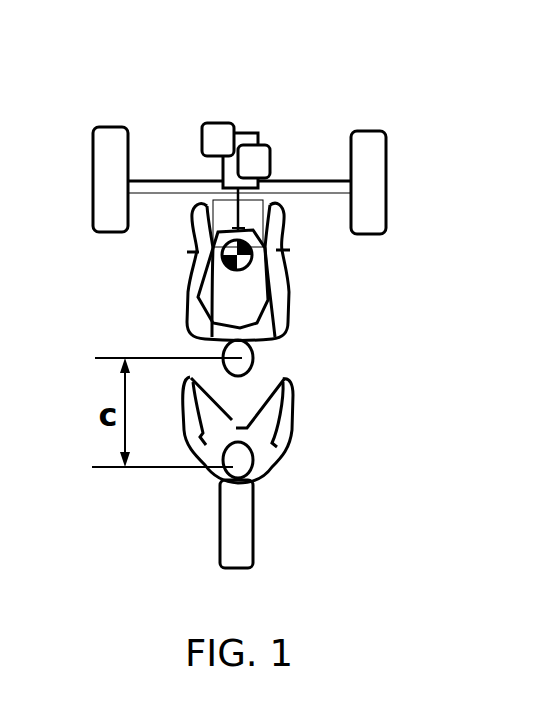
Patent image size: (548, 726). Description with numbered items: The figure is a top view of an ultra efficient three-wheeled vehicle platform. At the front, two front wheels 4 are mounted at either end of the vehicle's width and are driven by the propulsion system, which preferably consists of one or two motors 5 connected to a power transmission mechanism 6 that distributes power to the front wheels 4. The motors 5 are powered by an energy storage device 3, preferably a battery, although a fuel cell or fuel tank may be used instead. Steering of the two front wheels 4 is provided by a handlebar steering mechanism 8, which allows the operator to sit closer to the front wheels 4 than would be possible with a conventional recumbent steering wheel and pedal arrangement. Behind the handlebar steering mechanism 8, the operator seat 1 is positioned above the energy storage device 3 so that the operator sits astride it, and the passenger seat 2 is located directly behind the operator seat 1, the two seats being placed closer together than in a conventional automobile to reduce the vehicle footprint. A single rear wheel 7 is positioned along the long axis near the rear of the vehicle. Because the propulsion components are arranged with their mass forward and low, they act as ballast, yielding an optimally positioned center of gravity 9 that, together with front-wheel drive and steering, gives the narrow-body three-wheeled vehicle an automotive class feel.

The operator seat 1 is at (233, 356).
The passenger seat 2 is at (235, 458).
The energy storage device 3 is at (245, 290).
The front wheels 4 is at (113, 150).
The motors 5 is at (262, 162).
The power transmission mechanism 6 is at (235, 178).
The rear wheel 7 is at (238, 531).
The handlebar steering mechanism 8 is at (252, 235).
The center of gravity 9 is at (227, 268).